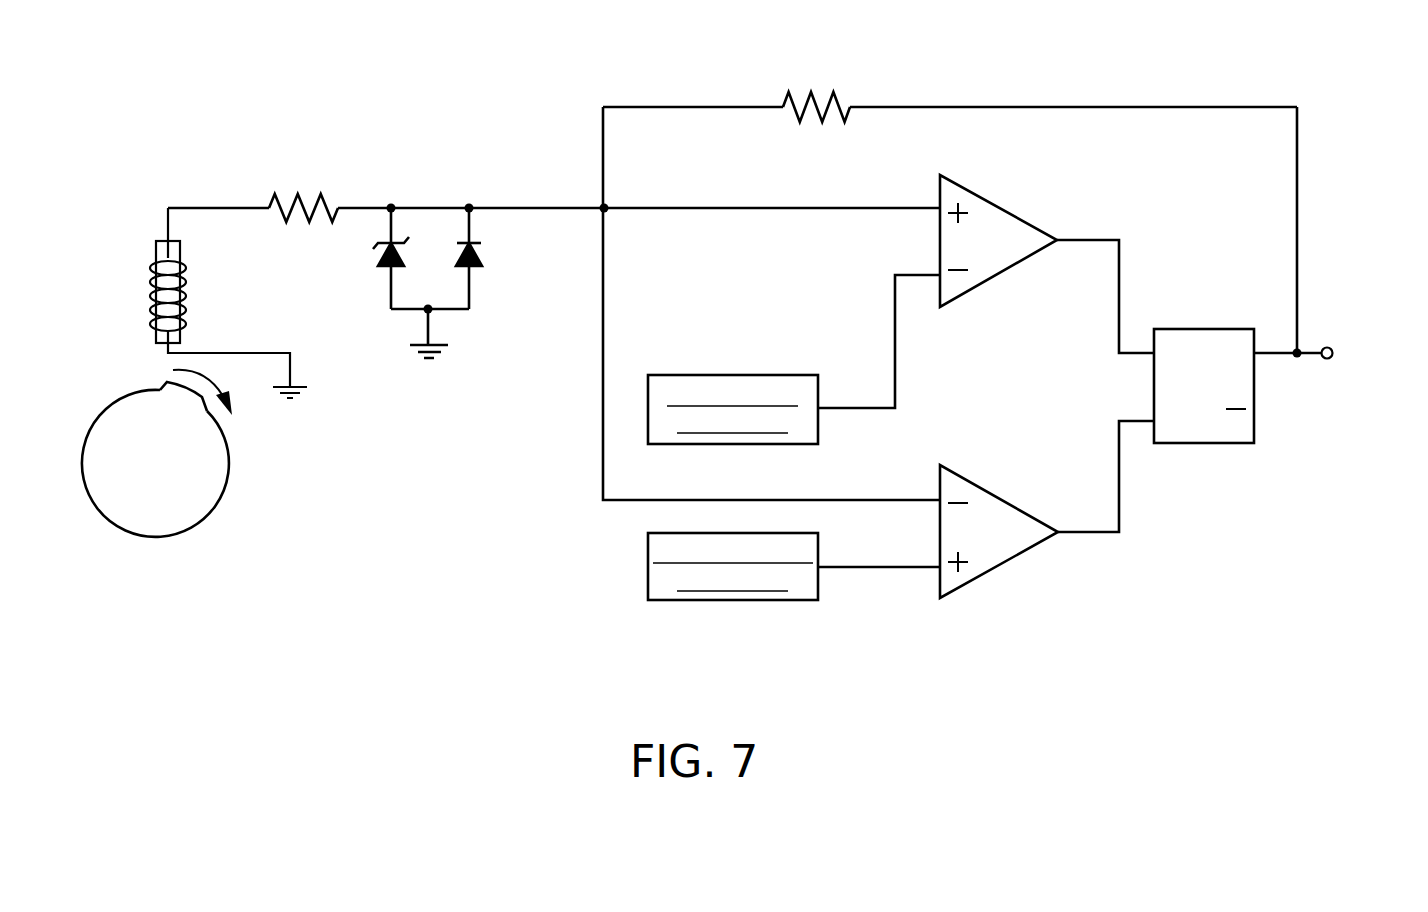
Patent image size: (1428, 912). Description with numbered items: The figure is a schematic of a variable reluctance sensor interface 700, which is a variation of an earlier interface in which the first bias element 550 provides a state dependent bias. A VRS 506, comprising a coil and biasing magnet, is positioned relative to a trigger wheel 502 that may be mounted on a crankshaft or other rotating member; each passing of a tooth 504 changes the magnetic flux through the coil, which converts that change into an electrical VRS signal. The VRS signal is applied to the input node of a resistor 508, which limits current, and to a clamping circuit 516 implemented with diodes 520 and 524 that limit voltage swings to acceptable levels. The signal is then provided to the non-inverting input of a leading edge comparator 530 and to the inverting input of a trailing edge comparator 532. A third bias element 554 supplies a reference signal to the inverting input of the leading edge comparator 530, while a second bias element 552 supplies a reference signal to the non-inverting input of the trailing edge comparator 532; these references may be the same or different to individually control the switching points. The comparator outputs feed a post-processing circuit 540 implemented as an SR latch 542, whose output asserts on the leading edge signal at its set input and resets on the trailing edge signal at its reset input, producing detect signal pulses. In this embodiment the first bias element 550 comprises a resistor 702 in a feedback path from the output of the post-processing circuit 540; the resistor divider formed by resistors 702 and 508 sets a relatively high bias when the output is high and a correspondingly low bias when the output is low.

The VRS interface 700 is at (731, 646).
The trigger wheel 502 is at (227, 470).
The tooth 504 is at (160, 389).
The VRS 506 is at (156, 261).
The resistor 508 is at (299, 195).
The clamping circuit 516 is at (450, 132).
The diode 520 is at (375, 253).
The diode 524 is at (483, 266).
The leading edge comparator 530 is at (985, 192).
The trailing edge comparator 532 is at (975, 480).
The post-processing circuit 540 is at (1200, 286).
The SR latch 542 is at (1212, 329).
The first bias element 550 is at (702, 68).
The second bias element 552 is at (681, 533).
The third bias element 554 is at (691, 375).
The resistor 702 is at (809, 93).